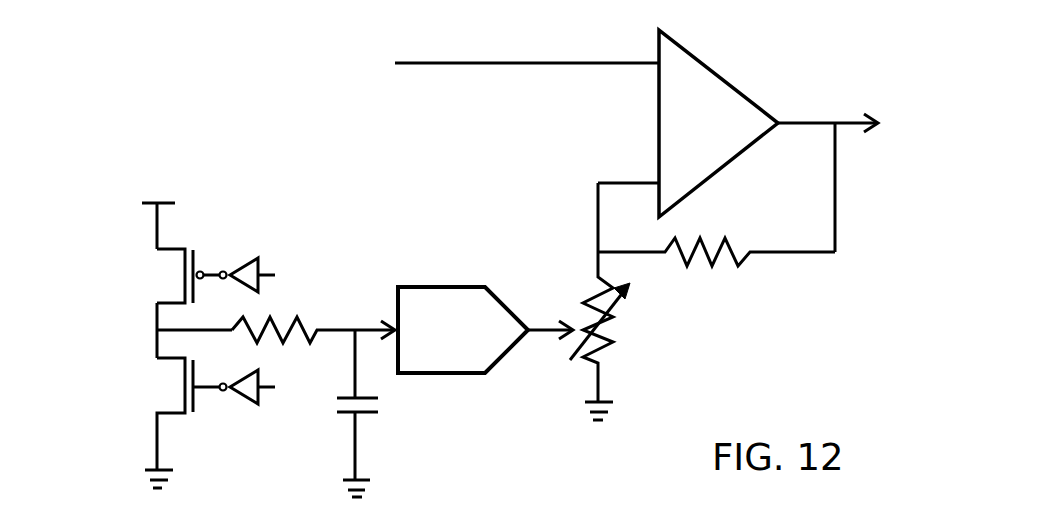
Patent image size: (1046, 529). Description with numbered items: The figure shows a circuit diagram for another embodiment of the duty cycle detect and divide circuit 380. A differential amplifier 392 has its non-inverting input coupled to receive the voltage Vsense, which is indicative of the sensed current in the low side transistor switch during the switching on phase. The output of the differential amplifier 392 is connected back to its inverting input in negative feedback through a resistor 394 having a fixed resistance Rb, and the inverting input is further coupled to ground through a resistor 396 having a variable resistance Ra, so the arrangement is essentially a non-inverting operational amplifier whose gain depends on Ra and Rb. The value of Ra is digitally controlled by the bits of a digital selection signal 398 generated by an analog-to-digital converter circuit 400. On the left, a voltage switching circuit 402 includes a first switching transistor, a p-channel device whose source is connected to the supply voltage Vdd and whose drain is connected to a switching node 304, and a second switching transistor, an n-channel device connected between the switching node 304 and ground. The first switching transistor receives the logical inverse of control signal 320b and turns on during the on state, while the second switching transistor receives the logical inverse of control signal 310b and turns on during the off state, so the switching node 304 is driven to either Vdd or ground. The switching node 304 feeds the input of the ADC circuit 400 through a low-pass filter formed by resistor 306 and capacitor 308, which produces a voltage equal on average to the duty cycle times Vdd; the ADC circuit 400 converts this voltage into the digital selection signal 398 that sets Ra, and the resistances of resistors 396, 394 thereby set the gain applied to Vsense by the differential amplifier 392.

The duty cycle detect and divide circuit 380 is at (333, 105).
The switching node 304 is at (155, 335).
The voltage switching circuit 402 is at (134, 360).
The control signal 320b is at (270, 273).
The control signal 310b is at (272, 384).
The resistor 306 is at (310, 333).
The capacitor 308 is at (378, 407).
The analog-to-digital converter (ADC) circuit 400 is at (435, 287).
The digital selection signal 398 is at (535, 322).
The resistor having variable resistance Ra 396 is at (610, 343).
The differential amplifier 392 is at (748, 148).
The resistor having fixed resistance Rb 394 is at (743, 253).